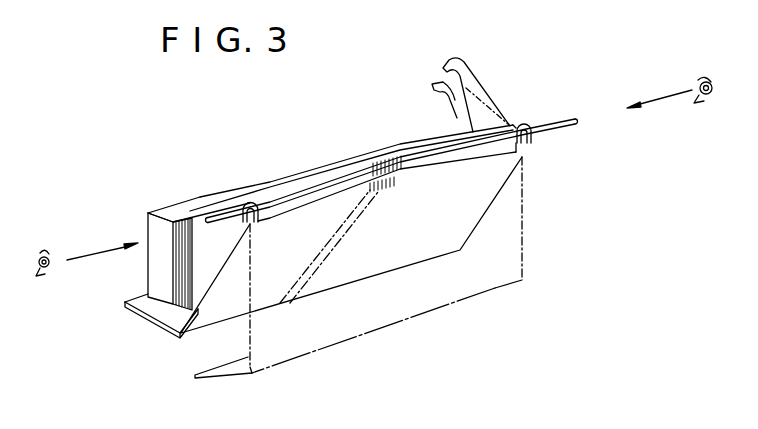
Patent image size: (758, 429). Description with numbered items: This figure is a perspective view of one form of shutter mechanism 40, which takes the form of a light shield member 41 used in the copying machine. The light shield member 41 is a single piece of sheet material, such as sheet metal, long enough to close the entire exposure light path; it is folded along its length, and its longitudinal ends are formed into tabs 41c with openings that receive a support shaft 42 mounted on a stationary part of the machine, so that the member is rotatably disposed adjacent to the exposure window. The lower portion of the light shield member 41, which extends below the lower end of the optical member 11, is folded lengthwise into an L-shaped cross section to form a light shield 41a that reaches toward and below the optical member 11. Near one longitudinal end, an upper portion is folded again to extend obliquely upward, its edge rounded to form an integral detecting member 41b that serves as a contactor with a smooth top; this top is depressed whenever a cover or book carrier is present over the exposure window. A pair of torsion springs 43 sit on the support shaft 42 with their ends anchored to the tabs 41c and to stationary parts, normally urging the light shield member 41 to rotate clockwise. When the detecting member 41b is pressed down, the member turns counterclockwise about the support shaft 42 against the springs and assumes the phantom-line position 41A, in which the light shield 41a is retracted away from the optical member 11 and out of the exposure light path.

The optical member 11 is at (183, 209).
The shutter mechanism 40 is at (503, 202).
The light shield member 41 is at (468, 229).
The light shield 41a is at (160, 318).
The retracted position of light shield member 41A is at (388, 314).
The detecting member 41b is at (466, 70).
The tabs 41c is at (250, 196).
The support shaft 42 is at (330, 183).
The torsion springs 43 is at (704, 82).